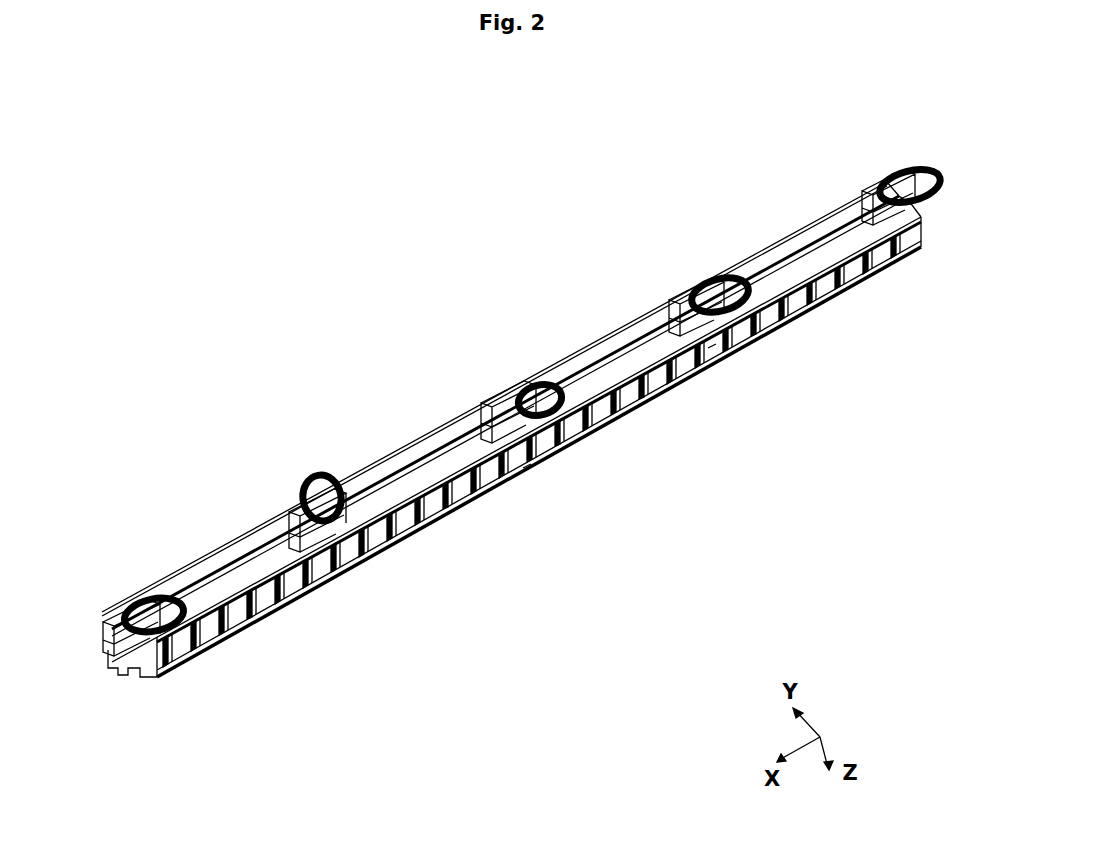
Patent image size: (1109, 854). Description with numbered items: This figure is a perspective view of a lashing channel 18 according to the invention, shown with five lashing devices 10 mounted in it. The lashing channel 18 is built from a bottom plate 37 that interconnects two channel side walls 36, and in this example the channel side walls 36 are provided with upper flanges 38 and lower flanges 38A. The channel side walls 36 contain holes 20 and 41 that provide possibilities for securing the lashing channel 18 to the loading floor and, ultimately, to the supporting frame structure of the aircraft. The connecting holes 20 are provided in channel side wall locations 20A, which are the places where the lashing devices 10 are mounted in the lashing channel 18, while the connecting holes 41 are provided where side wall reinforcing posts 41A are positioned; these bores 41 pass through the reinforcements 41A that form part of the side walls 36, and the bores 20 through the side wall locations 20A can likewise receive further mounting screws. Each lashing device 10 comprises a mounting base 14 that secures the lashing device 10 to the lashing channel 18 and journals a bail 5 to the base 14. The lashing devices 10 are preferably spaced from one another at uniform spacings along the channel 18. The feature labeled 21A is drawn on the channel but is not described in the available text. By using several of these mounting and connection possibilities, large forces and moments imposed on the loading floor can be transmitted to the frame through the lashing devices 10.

The bail 5 is at (129, 597).
The lashing device 10 is at (503, 360).
The mounting base 14 is at (103, 623).
The lashing channel 18 is at (373, 427).
The connecting holes 20 is at (354, 540).
The channel side wall locations 20A is at (713, 352).
The web edge 21A is at (527, 470).
The channel side walls 36 is at (183, 590).
The bottom plate 37 is at (226, 592).
The upper flanges 38 is at (262, 522).
The lower flanges 38A is at (590, 432).
The connecting holes 41 is at (243, 628).
The side wall reinforcing posts 41A is at (424, 517).